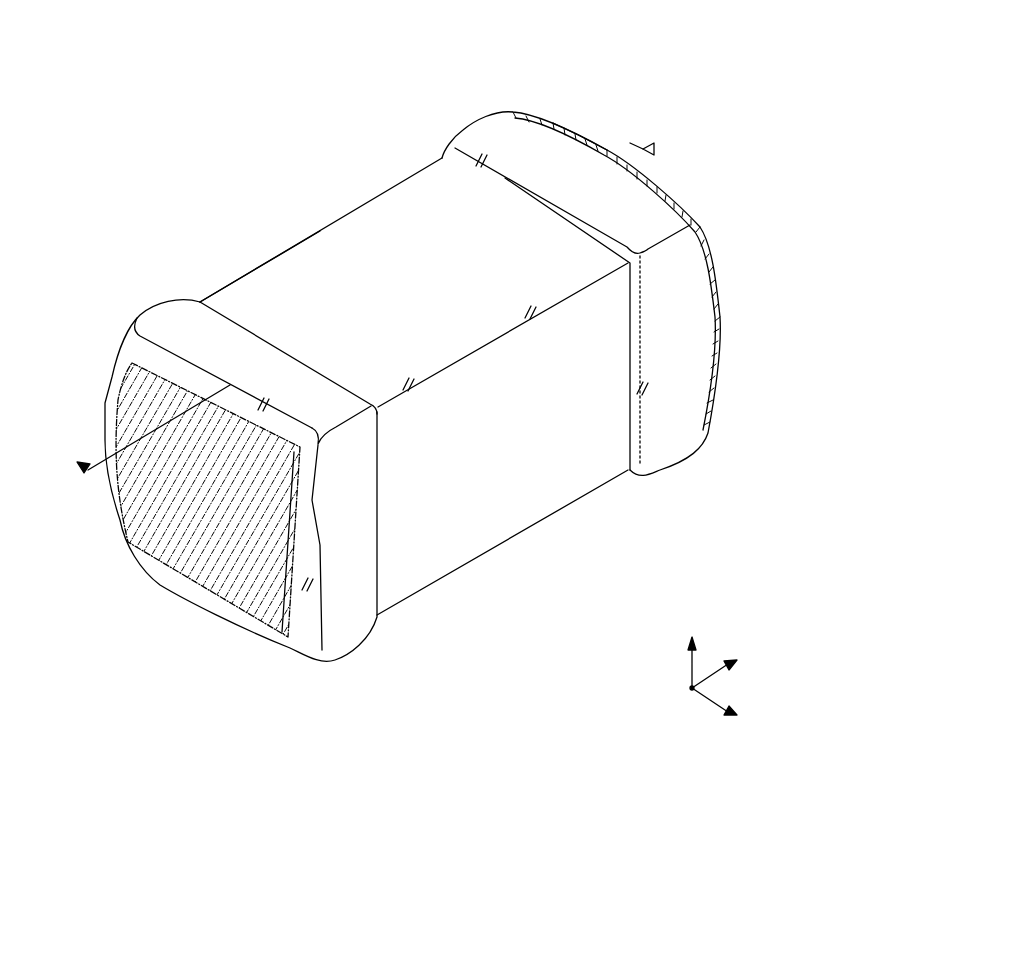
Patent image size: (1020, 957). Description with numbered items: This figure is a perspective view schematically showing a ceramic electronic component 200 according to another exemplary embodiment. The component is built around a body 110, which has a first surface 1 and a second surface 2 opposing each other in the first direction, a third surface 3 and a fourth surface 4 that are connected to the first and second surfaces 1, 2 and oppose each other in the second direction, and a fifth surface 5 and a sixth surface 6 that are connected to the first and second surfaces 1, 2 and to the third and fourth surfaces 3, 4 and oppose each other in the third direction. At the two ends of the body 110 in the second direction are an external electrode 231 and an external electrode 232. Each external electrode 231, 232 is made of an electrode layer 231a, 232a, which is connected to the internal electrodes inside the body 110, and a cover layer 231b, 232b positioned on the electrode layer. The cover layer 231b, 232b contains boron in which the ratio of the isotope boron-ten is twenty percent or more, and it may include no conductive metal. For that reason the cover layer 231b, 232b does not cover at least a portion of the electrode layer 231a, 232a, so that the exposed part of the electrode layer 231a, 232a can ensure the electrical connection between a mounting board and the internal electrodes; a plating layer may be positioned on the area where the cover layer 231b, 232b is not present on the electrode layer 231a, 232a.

The ceramic electronic component 200 is at (290, 54).
The body 110 is at (370, 217).
The first surface 1 is at (477, 552).
The second surface 2 is at (420, 200).
The third surface 3 is at (160, 535).
The fourth surface 4 is at (556, 153).
The fifth surface 5 is at (258, 271).
The sixth surface 6 is at (543, 493).
The external electrode 231 is at (176, 217).
The electrode layer 231a is at (166, 317).
The cover layer 231b is at (112, 390).
The external electrode 232 is at (533, 48).
The electrode layer 232a is at (481, 134).
The cover layer 232b is at (521, 112).